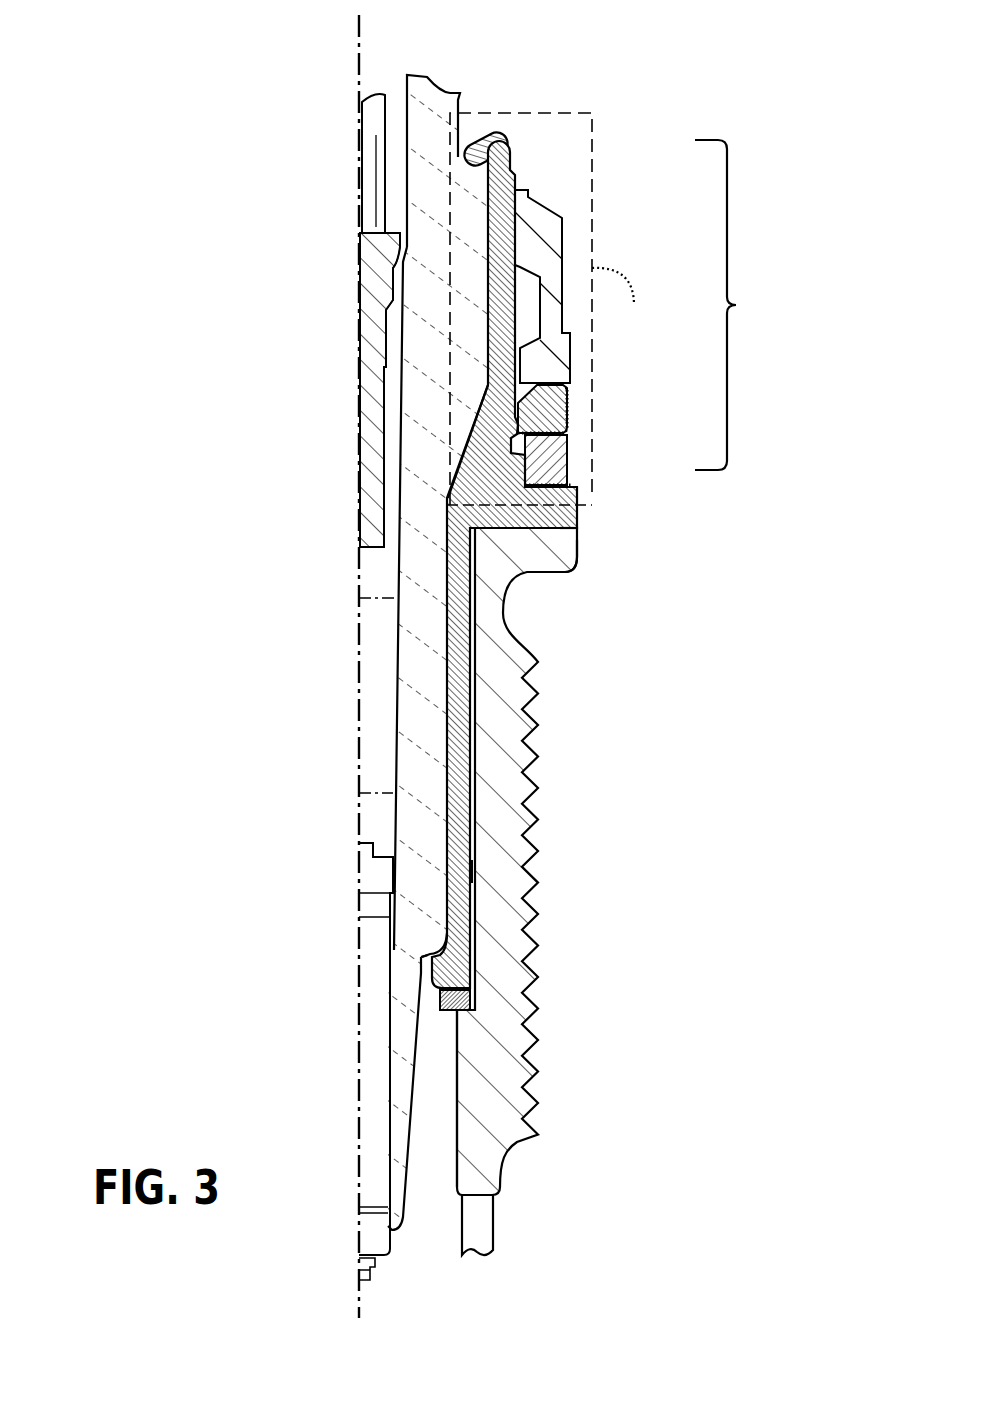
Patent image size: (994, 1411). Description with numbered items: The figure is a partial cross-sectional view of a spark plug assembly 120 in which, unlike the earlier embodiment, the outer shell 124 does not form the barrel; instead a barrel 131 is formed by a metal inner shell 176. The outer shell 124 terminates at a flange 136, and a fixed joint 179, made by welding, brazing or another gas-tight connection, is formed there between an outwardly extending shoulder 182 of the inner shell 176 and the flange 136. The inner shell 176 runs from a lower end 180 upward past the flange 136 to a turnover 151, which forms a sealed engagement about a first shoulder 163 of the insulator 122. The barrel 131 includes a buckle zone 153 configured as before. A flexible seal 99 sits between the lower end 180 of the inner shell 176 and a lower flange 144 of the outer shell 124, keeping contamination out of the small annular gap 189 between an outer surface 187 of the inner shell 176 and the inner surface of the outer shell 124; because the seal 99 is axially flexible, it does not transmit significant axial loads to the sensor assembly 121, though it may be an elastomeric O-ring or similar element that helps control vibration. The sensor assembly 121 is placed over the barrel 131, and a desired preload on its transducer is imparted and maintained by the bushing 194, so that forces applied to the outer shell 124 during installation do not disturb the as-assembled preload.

The flexible seal 99 is at (471, 1003).
The spark plug assembly 120 is at (610, 114).
The sensor assembly 121 is at (623, 303).
The insulator 122 is at (412, 72).
The outer shell 124 is at (527, 707).
The barrel 131 is at (740, 305).
The flange 136 is at (579, 543).
The lower flange 144 is at (457, 1038).
The turnover 151 is at (490, 133).
The buckle zone 153 is at (487, 437).
The first shoulder 163 is at (494, 150).
The inner shell 176 is at (480, 806).
The fixed joint 179 is at (585, 528).
The lower end 180 is at (422, 962).
The shoulder 182 is at (593, 505).
The outer surface 187 is at (471, 912).
The annular gap 189 is at (474, 860).
The bushing 194 is at (562, 235).